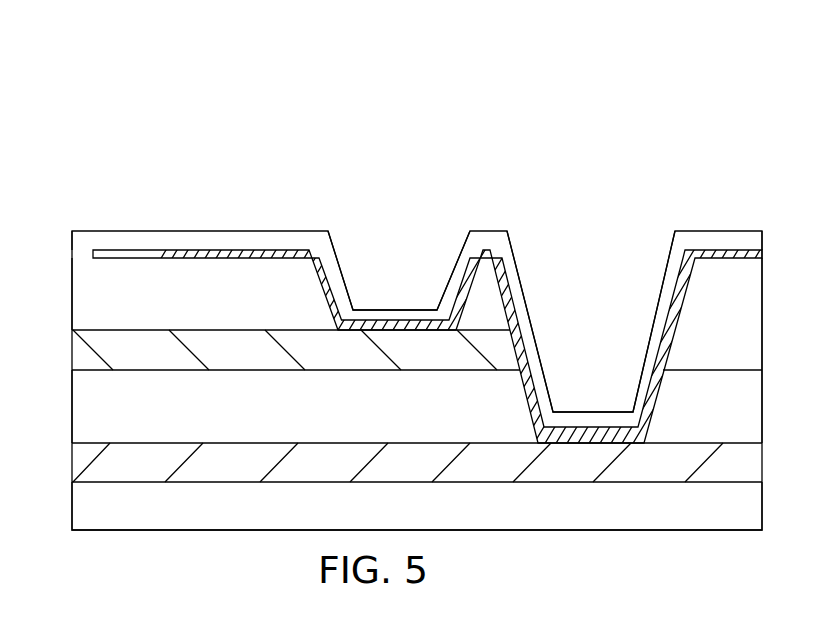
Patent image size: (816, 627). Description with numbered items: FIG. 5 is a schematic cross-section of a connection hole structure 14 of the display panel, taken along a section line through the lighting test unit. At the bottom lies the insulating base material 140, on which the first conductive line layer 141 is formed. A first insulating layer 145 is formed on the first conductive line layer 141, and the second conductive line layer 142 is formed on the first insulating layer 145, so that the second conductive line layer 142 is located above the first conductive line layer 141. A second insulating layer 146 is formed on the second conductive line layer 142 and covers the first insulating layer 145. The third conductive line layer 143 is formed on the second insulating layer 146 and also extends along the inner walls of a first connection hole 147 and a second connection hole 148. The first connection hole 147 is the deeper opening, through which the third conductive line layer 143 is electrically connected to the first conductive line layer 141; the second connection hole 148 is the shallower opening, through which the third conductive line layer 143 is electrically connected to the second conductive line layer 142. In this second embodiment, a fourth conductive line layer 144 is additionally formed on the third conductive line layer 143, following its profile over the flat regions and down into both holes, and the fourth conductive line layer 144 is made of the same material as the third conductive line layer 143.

The connection hole structure 14 is at (396, 61).
The insulating base material 140 is at (88, 505).
The first conductive line layer 141 is at (88, 457).
The second conductive line layer 142 is at (80, 359).
The third conductive line layer 143 is at (100, 256).
The fourth conductive line layer 144 is at (104, 240).
The first insulating layer 145 is at (88, 418).
The second insulating layer 146 is at (88, 304).
The first connection hole 147 is at (572, 316).
The second connection hole 148 is at (380, 297).